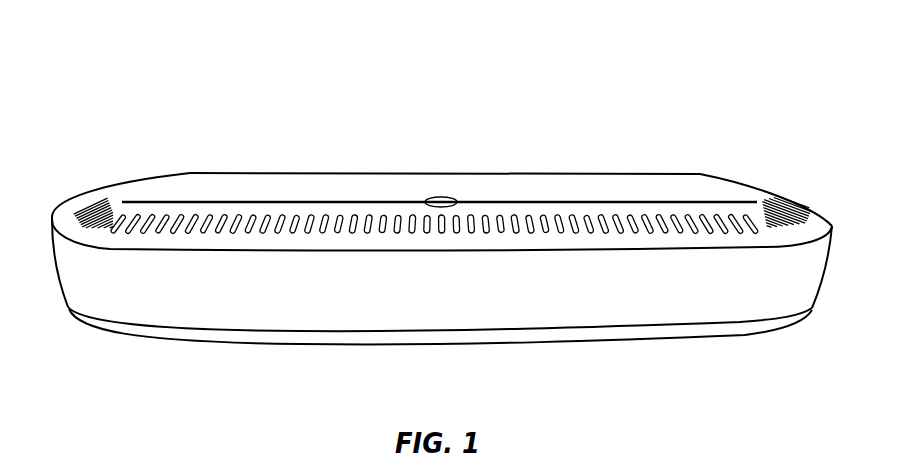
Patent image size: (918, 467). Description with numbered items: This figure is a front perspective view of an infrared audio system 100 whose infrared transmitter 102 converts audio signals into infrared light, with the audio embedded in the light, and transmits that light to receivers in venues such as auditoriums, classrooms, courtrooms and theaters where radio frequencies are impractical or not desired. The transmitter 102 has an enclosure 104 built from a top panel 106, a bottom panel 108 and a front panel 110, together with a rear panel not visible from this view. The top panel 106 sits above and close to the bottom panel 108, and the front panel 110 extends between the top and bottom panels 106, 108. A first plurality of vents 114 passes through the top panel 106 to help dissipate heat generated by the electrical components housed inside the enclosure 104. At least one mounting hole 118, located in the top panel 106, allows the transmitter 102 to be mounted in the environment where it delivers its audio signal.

The infrared audio system 100 is at (387, 121).
The infrared transmitter 102 is at (618, 195).
The enclosure 104 is at (820, 225).
The top panel 106 is at (92, 198).
The bottom panel 108 is at (763, 328).
The front panel 110 is at (812, 272).
The first plurality of vents 114 is at (58, 232).
The mounting hole 118 is at (443, 196).